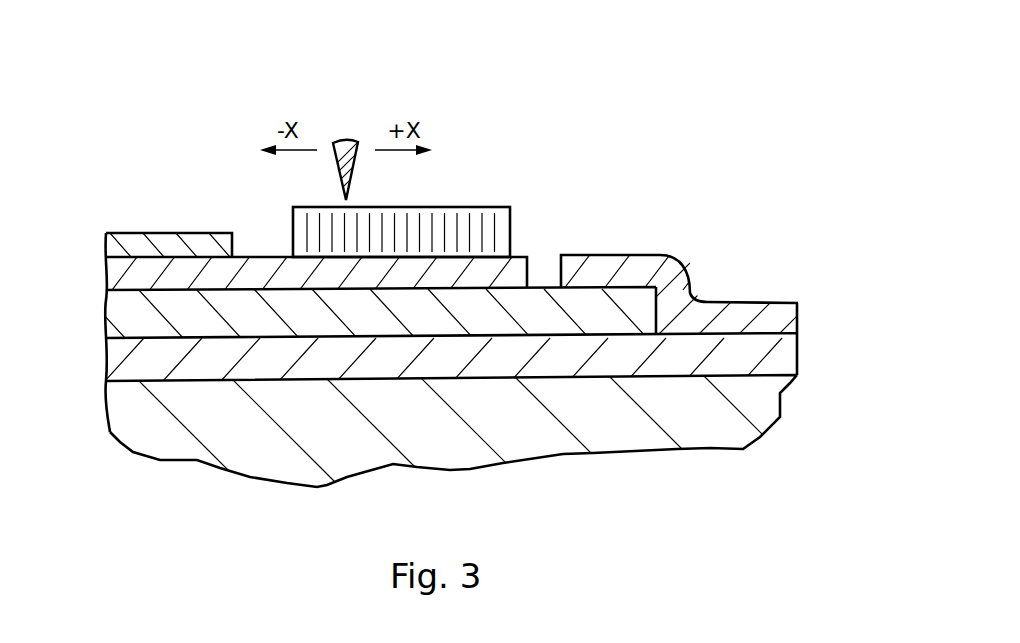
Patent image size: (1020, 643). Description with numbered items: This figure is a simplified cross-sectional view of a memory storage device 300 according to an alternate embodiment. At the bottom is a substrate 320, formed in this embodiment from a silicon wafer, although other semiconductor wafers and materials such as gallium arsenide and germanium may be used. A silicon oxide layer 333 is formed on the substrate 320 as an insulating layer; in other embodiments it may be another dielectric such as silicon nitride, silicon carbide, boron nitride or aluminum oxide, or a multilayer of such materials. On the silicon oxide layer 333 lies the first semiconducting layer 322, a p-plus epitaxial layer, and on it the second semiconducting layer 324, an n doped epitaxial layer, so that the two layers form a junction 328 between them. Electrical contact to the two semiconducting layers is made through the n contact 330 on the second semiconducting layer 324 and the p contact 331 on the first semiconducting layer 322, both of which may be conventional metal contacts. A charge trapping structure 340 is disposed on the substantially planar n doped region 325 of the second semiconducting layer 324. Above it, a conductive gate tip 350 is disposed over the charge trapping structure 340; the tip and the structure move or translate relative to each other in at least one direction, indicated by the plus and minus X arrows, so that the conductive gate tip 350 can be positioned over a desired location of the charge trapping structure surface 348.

The memory storage device 300 is at (586, 92).
The substrate 320 is at (707, 433).
The first semiconducting layer 322 is at (118, 320).
The second semiconducting layer 324 is at (118, 275).
The n doped region 325 is at (417, 265).
The junction 328 is at (275, 288).
The n contact 330 is at (208, 245).
The p contact 331 is at (638, 267).
The silicon oxide layer 333 is at (110, 365).
The charge trapping structure 340 is at (500, 228).
The charge trapping structure surface 348 is at (478, 207).
The conductive gate tip 350 is at (340, 142).